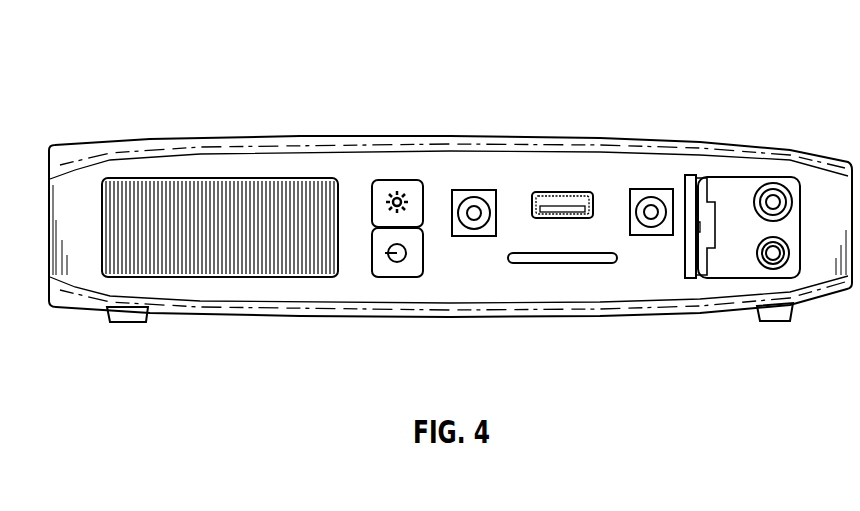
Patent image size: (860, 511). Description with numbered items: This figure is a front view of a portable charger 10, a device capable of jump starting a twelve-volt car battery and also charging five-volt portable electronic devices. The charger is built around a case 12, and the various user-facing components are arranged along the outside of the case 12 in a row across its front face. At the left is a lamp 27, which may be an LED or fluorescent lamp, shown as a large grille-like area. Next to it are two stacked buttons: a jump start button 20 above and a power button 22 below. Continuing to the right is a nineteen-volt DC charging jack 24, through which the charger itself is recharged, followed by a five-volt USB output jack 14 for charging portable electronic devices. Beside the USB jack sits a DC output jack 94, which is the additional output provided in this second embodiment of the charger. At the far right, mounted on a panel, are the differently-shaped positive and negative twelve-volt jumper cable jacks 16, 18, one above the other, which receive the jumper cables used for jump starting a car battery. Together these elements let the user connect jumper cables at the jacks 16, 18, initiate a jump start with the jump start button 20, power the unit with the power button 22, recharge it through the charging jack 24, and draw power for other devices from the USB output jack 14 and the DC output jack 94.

The portable charger 10 is at (158, 62).
The case 12 is at (100, 143).
The USB output jack 14 is at (563, 192).
The positive jumper cable jack 16 is at (773, 184).
The negative jumper cable jack 18 is at (757, 277).
The jump start button 20 is at (397, 190).
The power button 22 is at (397, 278).
The DC charging jack 24 is at (474, 190).
The lamp 27 is at (225, 277).
The DC output jack 94 is at (651, 195).